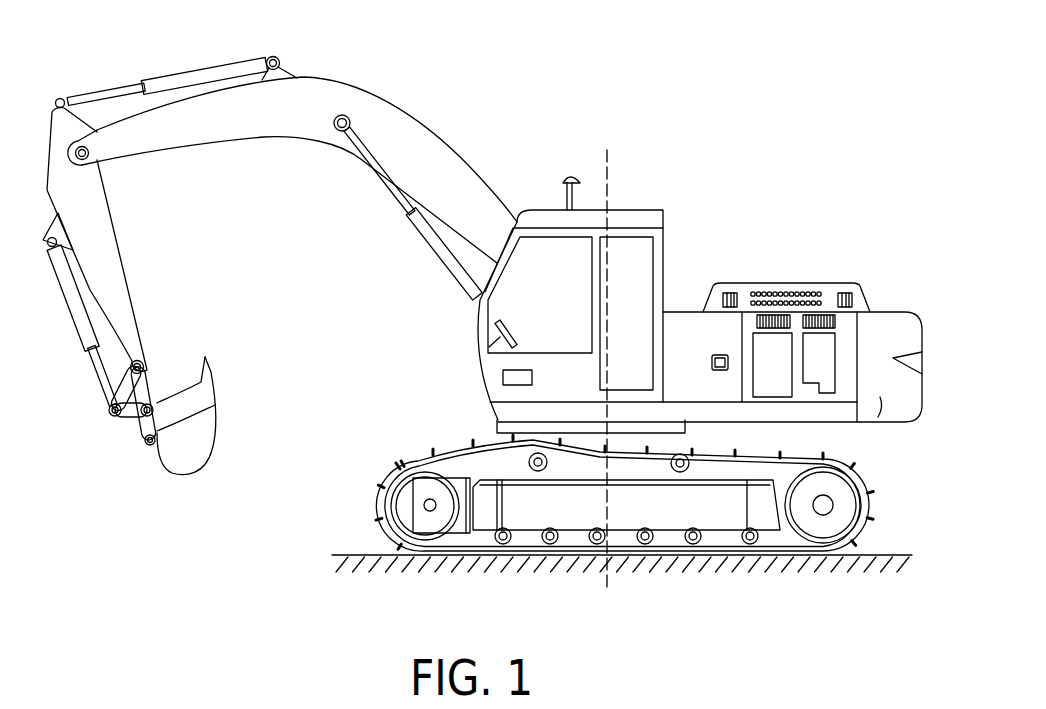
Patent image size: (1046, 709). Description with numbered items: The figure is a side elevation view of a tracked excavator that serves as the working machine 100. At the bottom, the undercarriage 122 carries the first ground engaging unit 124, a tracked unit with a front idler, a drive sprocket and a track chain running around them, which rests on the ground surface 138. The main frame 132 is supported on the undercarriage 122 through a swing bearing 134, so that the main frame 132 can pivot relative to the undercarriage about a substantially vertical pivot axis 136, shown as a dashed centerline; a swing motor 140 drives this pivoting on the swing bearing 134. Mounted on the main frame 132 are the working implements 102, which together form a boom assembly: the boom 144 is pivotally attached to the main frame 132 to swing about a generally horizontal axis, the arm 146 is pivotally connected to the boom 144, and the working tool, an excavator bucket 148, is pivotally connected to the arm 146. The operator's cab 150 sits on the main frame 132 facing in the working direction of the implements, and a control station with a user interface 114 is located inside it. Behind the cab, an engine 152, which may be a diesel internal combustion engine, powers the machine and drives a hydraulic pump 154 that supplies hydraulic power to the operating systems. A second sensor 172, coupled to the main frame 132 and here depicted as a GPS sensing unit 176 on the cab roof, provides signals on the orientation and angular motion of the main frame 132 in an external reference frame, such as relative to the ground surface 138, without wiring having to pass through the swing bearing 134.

The working machine 100 is at (782, 103).
The working implement 102 is at (439, 101).
The user interface 114 is at (510, 325).
The undercarriage 122 is at (668, 493).
The first ground engaging unit 124 is at (917, 485).
The main frame 132 is at (835, 415).
The swing bearing 134 is at (532, 423).
The pivot axis 136 is at (608, 177).
The ground surface 138 is at (883, 553).
The swing motor 140 is at (520, 432).
The boom 144 is at (422, 185).
The arm 146 is at (103, 246).
The bucket 148 is at (190, 463).
The operator's cab 150 is at (645, 217).
The engine 152 is at (843, 290).
The hydraulic pump 154 is at (712, 361).
The second sensor 172 is at (633, 159).
The GPS sensing unit 176 is at (572, 176).